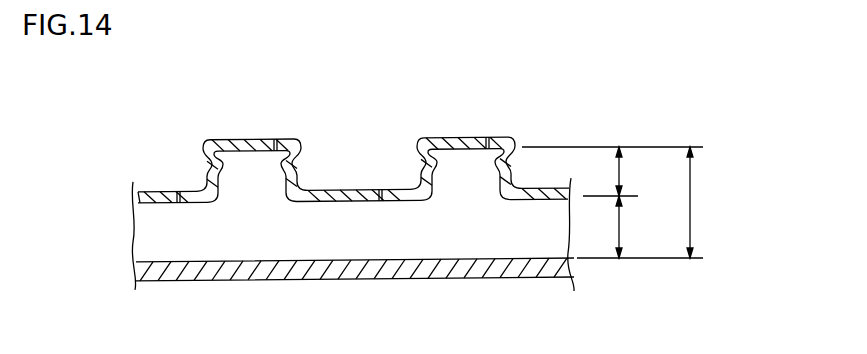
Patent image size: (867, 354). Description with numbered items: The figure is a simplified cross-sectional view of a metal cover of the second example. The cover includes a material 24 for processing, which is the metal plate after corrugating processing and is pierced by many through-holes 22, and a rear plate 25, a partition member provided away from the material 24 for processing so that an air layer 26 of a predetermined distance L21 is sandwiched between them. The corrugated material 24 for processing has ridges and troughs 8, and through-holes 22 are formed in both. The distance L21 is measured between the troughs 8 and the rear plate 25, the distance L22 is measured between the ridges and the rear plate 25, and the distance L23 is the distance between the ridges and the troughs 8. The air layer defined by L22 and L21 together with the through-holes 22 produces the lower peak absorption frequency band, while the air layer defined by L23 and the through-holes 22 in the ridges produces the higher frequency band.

The material for processing 24 is at (152, 152).
The through-holes 22 is at (275, 140).
The troughs 8 is at (340, 188).
The rear plate 25 is at (139, 283).
The air layer 26 is at (303, 235).
The distance between the ridges and the troughs L23 is at (623, 177).
The distance between the ridges and the rear plate L22 is at (690, 201).
The distance between the troughs and the rear plate L21 is at (614, 228).